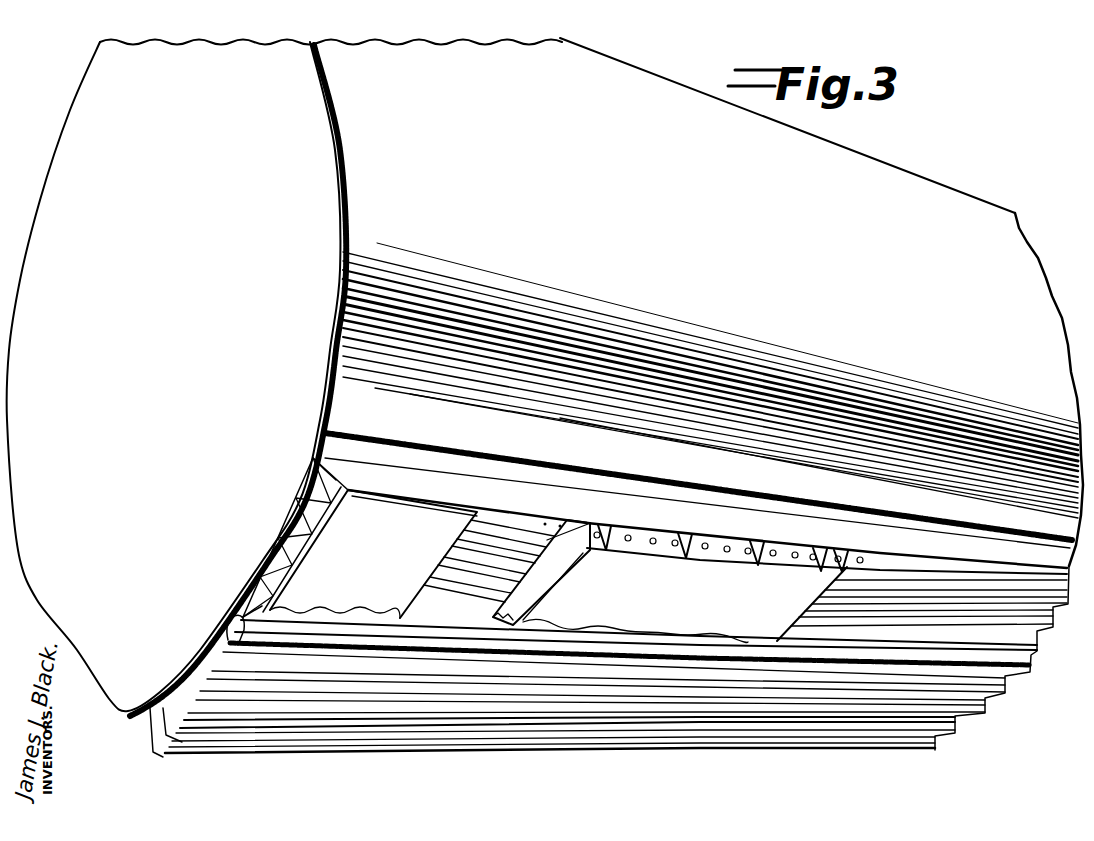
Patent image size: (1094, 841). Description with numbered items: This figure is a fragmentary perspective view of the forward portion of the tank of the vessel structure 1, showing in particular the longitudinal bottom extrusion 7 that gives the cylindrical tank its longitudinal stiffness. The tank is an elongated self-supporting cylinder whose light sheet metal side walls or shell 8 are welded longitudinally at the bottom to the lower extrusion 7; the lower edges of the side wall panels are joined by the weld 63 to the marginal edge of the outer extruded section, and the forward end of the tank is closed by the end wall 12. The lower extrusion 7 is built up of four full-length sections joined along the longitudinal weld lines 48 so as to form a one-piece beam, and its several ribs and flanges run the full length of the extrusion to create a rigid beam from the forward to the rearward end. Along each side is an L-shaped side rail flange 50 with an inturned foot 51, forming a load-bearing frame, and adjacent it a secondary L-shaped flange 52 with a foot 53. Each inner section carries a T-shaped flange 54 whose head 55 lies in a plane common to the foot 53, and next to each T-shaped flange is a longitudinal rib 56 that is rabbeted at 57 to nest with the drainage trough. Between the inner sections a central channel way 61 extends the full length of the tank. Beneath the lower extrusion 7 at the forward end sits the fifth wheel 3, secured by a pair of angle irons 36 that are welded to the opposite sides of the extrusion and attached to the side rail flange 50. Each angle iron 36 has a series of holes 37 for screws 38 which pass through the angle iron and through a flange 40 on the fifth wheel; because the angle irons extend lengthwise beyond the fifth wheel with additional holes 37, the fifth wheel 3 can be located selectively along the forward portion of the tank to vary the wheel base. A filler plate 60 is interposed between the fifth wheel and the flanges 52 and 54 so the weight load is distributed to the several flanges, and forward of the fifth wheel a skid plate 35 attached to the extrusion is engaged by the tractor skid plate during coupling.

The vessel structure 1 is at (879, 188).
The fifth wheel 3 is at (791, 594).
The lower extrusion 7 is at (390, 466).
The side wall 8 is at (1003, 232).
The end wall 12 is at (86, 132).
The skid plate 35 is at (386, 512).
The angle iron 36 is at (882, 563).
The hole 37 is at (548, 521).
The screw 38 is at (633, 530).
The flange 40 is at (748, 527).
The weld line 48 is at (412, 652).
The side rail flange 50 is at (326, 478).
The inturned foot 51 is at (312, 492).
The secondary L-shaped flange 52 is at (290, 538).
The foot 53 is at (440, 727).
The T-shaped flange 54 is at (283, 564).
The head 55 is at (488, 710).
The longitudinal rib 56 is at (217, 662).
The rabbet 57 is at (432, 606).
The filler plate 60 is at (572, 574).
The channel way 61 is at (318, 650).
The weld 63 is at (516, 456).